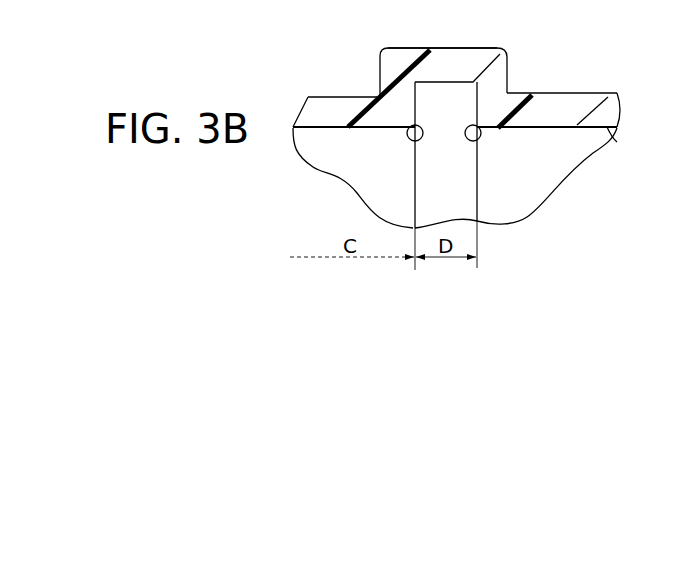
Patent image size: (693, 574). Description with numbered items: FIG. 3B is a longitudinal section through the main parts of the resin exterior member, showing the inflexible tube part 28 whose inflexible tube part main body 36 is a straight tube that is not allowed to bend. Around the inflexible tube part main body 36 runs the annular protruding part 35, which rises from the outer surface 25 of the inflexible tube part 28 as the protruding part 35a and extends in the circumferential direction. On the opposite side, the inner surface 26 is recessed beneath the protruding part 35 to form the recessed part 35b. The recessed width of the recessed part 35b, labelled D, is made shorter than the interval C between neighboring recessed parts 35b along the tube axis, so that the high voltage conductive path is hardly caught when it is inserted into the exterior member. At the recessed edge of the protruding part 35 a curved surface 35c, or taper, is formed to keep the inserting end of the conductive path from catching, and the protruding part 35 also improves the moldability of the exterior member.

The protruding part 35 is at (437, 57).
The protruding part 35a is at (480, 50).
The recessed part 35b is at (445, 100).
The curved surface 35c is at (411, 140).
The inflexible tube part main body 36 is at (337, 103).
The inflexible tube part 28 is at (593, 93).
The outer surface 25 is at (610, 97).
The inner surface 26 is at (617, 142).